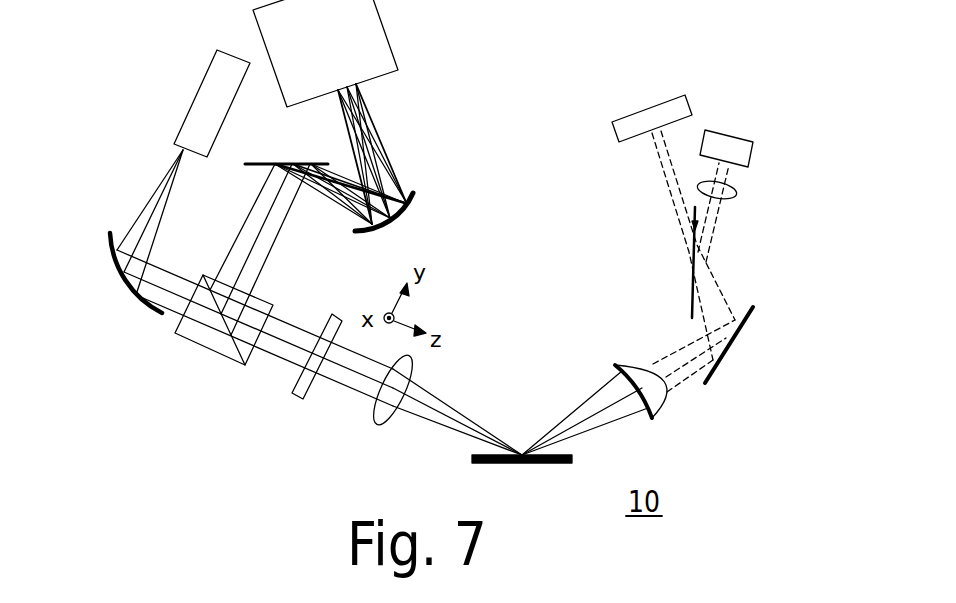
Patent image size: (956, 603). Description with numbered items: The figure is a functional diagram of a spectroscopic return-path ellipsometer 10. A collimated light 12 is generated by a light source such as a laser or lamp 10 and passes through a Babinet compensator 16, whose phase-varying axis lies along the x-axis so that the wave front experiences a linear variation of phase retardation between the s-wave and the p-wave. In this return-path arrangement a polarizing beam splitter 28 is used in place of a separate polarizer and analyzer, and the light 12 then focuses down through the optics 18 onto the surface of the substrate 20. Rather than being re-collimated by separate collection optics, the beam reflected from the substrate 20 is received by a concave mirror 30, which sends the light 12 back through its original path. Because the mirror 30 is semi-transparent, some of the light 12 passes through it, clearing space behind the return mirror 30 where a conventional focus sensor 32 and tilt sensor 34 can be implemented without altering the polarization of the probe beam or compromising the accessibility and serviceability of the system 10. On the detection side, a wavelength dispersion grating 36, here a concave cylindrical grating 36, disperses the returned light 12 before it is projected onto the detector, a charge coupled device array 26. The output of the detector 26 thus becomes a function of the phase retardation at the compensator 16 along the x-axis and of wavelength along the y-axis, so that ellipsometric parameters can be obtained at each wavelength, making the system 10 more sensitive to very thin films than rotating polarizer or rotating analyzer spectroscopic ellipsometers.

The ellipsometer 10 is at (195, 88).
The collimated light 12 is at (162, 315).
The Babinet compensator 16 is at (292, 400).
The optics 18 is at (372, 407).
The substrate 20 is at (545, 464).
The charge coupled device array 26 is at (387, 38).
The polarizing beam splitter 28 is at (207, 348).
The concave mirror 30 is at (665, 406).
The focus sensor 32 is at (692, 105).
The tilt sensor 34 is at (753, 152).
The wavelength dispersion grating 36 is at (416, 198).